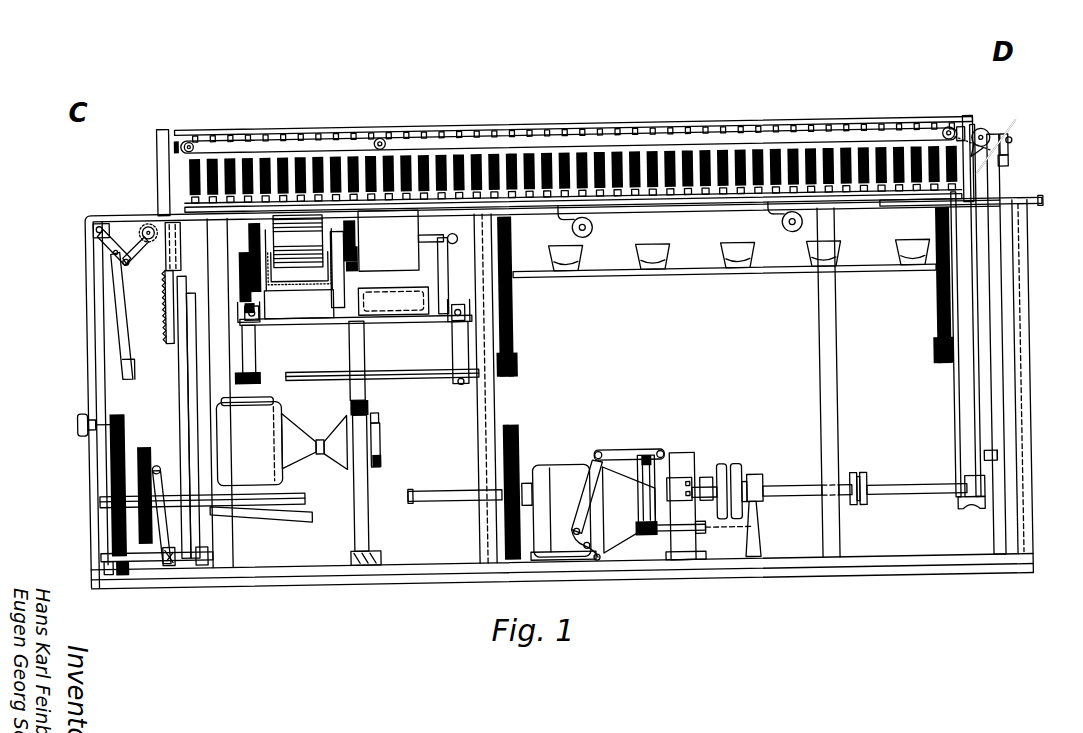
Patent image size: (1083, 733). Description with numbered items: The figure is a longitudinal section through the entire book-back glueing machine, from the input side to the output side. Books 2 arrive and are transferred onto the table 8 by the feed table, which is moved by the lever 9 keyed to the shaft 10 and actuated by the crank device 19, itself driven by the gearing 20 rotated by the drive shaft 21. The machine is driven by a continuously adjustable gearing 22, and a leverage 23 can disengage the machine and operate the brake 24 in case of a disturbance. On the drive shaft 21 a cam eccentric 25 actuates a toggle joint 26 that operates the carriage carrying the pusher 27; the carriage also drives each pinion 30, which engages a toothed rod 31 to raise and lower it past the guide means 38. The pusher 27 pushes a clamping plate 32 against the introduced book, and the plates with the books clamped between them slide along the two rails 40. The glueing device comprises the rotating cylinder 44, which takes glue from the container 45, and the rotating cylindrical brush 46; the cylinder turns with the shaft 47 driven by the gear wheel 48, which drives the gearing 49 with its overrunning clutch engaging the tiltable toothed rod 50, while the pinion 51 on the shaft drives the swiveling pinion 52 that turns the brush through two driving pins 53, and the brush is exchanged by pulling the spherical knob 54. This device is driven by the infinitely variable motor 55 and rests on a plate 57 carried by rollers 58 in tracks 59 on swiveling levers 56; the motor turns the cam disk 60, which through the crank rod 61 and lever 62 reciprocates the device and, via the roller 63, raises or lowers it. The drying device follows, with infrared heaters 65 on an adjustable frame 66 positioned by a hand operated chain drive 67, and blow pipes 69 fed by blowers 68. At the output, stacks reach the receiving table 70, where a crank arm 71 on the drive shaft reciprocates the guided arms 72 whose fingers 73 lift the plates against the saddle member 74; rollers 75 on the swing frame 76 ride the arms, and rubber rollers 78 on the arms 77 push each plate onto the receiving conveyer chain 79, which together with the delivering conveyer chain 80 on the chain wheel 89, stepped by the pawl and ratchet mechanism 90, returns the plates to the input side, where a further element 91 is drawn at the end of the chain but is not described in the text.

The books 2 is at (452, 170).
The table 8 is at (108, 217).
The lever 9 is at (190, 362).
The shaft 10 is at (131, 557).
The crank device 19 is at (151, 473).
The gearing 20 is at (138, 445).
The drive shaft 21 is at (290, 497).
The continuously adjustable gearing 22 is at (545, 475).
The leverage 23 is at (623, 460).
The brake 24 is at (644, 522).
The cam eccentric 25 is at (113, 577).
The toggle joint 26 is at (122, 293).
The pusher 27 is at (152, 214).
The pinion 30 is at (150, 244).
The toothed rod 31 is at (161, 310).
The clamping plate 32 is at (270, 135).
The guide means 38 is at (161, 163).
The rails 40 is at (195, 215).
The rotating cylinder 44 is at (298, 241).
The container 45 is at (298, 274).
The rotating cylindrical brush 46 is at (393, 273).
The shaft 47 is at (324, 246).
The gear wheel 48 is at (253, 232).
The gearing 49 is at (242, 263).
The toothed rod 50 is at (242, 308).
The pinion 51 is at (322, 241).
The pinion 52 is at (346, 265).
The driving pins 53 is at (352, 267).
The spherical knob 54 is at (452, 240).
The infinitely variable motor 55 is at (282, 440).
The swiveling levers 56 is at (247, 375).
The plate 57 is at (324, 325).
The rollers 58 is at (251, 315).
The tracks 59 is at (244, 316).
The cam disk 60 is at (359, 414).
The crank rod 61 is at (369, 440).
The lever 62 is at (358, 365).
The roller 63 is at (369, 425).
The infrared heaters 65 is at (576, 280).
The frame 66 is at (543, 286).
The hand operated chain drive 67 is at (511, 336).
The blowers 68 is at (592, 236).
The blow pipes 69 is at (676, 216).
The receiving table 70 is at (1042, 221).
The crank arm 71 is at (982, 474).
The guided arms 72 is at (1000, 199).
The finger 73 is at (982, 146).
The saddle member 74 is at (972, 144).
The rollers 75 is at (1009, 179).
The swing frame 76 is at (1015, 140).
The arms 77 is at (1015, 163).
The rubber rollers 78 is at (1012, 156).
The receiving conveyer chain 79 is at (509, 139).
The delivering conveyer chain 80 is at (306, 136).
The chain wheel 89 is at (385, 144).
The pawl and ratchet mechanism 90 is at (197, 146).
The guide 91 is at (181, 143).